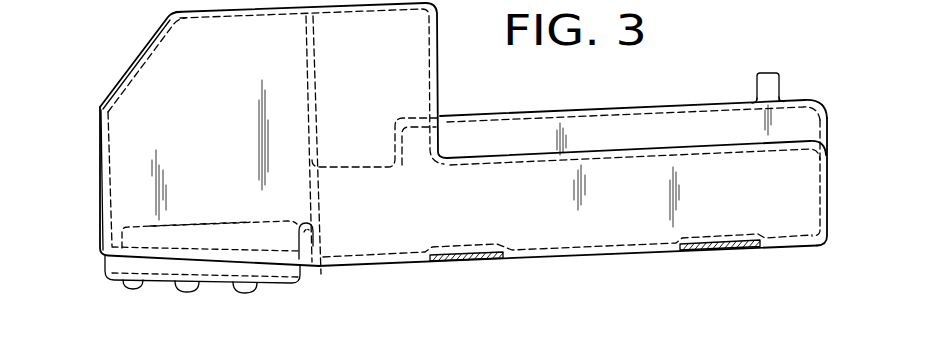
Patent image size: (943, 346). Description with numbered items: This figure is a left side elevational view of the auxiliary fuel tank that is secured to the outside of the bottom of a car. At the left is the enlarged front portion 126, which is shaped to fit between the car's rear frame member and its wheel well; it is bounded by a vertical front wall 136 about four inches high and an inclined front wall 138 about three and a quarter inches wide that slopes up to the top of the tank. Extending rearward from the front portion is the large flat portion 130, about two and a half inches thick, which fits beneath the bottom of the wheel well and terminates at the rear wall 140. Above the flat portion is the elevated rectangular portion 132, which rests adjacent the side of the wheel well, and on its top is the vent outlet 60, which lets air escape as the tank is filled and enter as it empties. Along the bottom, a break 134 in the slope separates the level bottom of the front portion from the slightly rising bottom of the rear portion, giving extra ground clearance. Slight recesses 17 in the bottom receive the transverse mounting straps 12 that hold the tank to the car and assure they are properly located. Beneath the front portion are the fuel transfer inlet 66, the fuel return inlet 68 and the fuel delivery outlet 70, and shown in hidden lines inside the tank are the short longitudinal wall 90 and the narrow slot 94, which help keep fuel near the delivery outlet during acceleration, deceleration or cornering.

The transverse mounting strap 12 is at (463, 262).
The recess 17 is at (473, 254).
The vent outlet 60 is at (757, 88).
The fuel transfer inlet 66 is at (185, 285).
The fuel return inlet 68 is at (125, 285).
The fuel delivery outlet 70 is at (250, 289).
The short longitudinal wall 90 is at (201, 232).
The narrow slot 94 is at (295, 238).
The enlarged front portion 126 is at (205, 129).
The large flat portion 130 is at (609, 152).
The elevated rectangular portion 132 is at (545, 110).
The break in the slope of the bottom 134 is at (320, 265).
The vertical front wall 136 is at (100, 153).
The inclined front wall 138 is at (134, 62).
The wall 140 is at (832, 172).